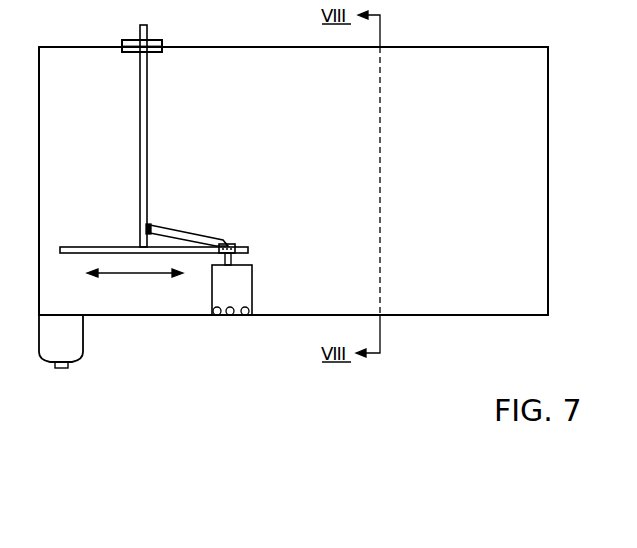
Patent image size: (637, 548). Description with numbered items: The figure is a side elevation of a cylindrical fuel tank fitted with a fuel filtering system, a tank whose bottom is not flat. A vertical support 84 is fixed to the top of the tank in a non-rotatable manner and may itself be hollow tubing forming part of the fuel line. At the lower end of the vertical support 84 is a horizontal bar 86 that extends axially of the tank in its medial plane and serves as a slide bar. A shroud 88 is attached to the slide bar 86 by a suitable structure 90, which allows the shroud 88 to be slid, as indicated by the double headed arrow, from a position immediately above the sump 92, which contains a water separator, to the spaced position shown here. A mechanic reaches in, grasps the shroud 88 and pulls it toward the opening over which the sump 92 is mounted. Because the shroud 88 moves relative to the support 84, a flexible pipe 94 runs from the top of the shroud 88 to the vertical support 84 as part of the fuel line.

The vertical support 84 is at (147, 127).
The horizontal bar 86 is at (247, 246).
The shroud 88 is at (252, 296).
The structure 90 is at (233, 262).
The sump 92 is at (83, 353).
The flexible pipe 94 is at (187, 232).